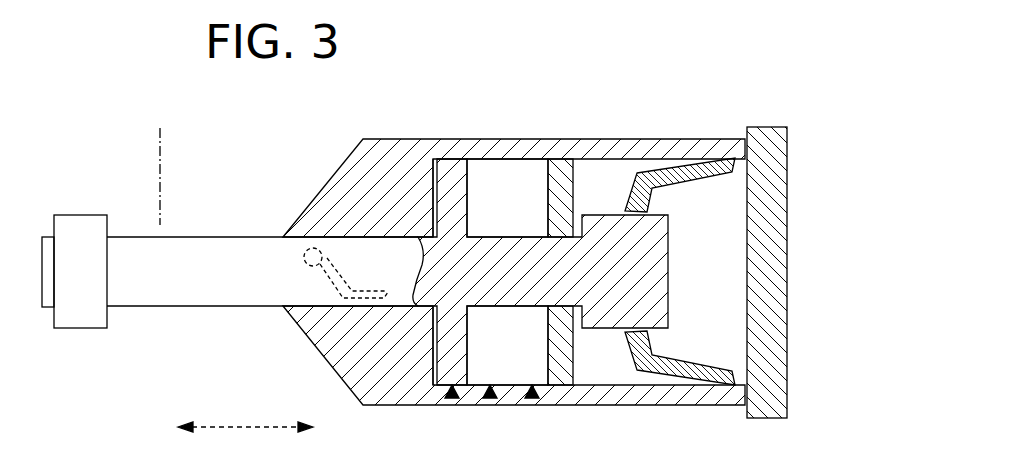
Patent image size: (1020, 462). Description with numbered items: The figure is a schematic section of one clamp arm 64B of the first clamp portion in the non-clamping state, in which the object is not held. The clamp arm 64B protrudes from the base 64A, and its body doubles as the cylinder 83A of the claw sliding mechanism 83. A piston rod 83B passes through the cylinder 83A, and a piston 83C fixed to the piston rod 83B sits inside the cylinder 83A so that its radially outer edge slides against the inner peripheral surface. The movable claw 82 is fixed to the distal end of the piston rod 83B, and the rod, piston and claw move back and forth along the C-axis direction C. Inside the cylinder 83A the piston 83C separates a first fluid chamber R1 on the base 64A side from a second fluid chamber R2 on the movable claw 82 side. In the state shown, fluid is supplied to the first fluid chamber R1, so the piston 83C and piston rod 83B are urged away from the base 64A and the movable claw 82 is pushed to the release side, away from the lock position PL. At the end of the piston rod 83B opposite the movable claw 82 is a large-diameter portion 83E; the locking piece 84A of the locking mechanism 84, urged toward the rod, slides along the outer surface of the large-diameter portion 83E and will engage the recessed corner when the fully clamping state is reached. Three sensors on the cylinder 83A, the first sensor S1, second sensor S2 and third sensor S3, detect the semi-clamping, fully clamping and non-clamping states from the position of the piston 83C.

The movable claw 82 is at (82, 322).
The claw sliding mechanism 83 is at (467, 139).
The cylinder 83A is at (689, 142).
The clamp arm 64B is at (700, 139).
The piston rod 83B is at (515, 308).
The piston 83C is at (468, 173).
The large-diameter portion 83E is at (665, 273).
The locking mechanism 84 is at (664, 389).
The locking piece 84A is at (675, 368).
The base 64A is at (787, 357).
The first fluid chamber R1 is at (531, 213).
The second fluid chamber R2 is at (432, 176).
The first sensor S1 is at (490, 400).
The second sensor S2 is at (534, 400).
The third sensor S3 is at (450, 400).
The lock position PL is at (159, 161).
The C-axis direction C is at (245, 440).